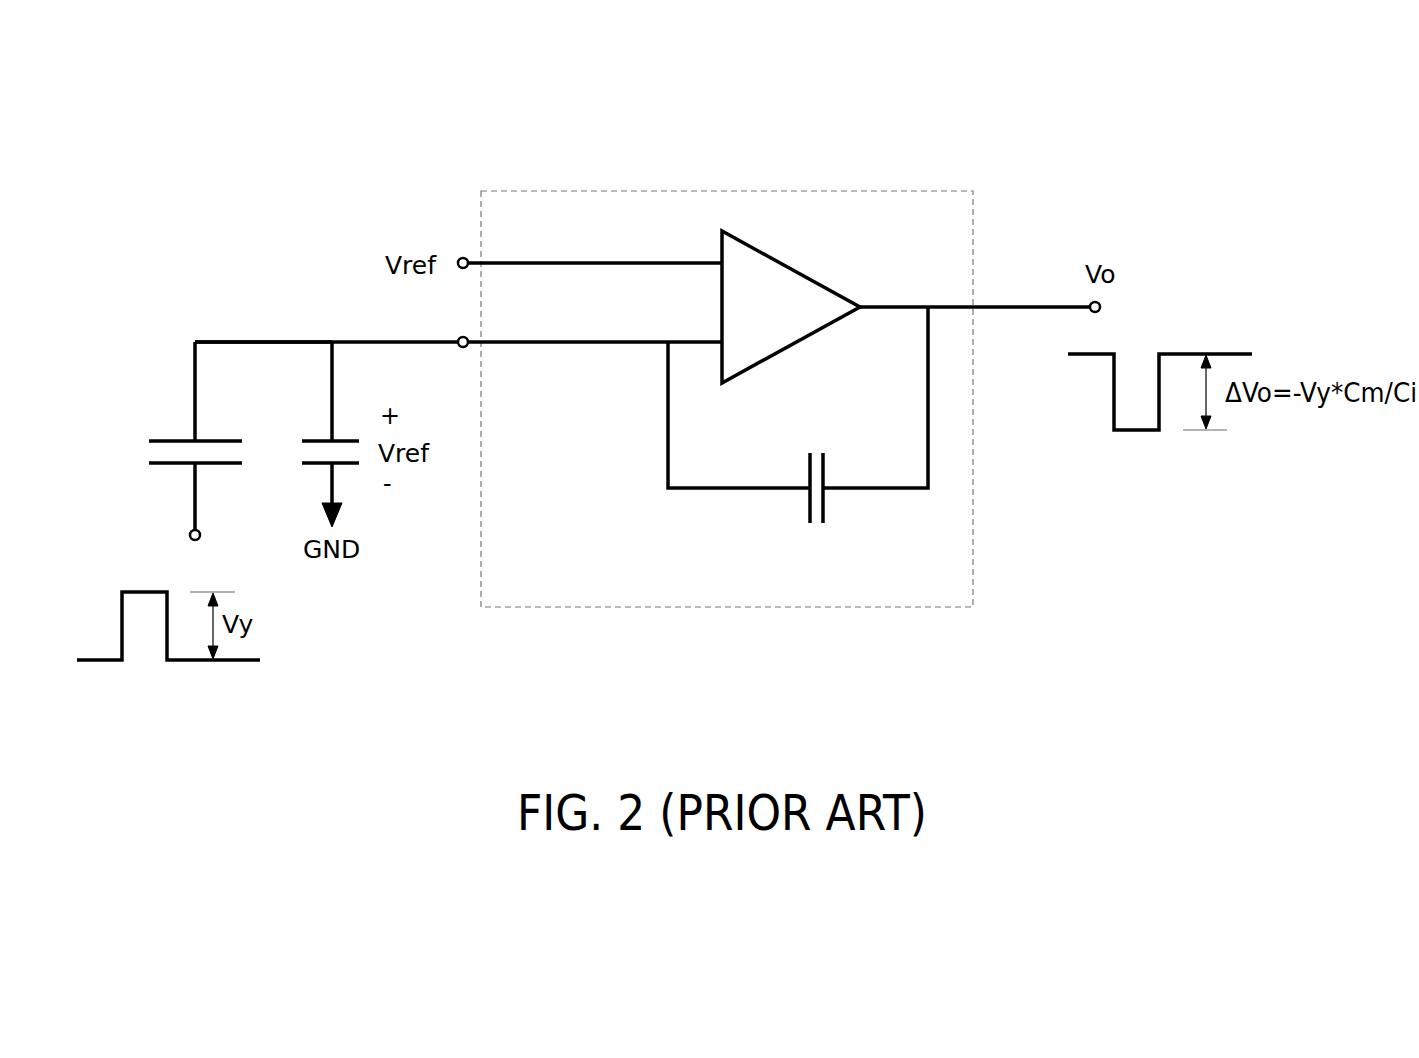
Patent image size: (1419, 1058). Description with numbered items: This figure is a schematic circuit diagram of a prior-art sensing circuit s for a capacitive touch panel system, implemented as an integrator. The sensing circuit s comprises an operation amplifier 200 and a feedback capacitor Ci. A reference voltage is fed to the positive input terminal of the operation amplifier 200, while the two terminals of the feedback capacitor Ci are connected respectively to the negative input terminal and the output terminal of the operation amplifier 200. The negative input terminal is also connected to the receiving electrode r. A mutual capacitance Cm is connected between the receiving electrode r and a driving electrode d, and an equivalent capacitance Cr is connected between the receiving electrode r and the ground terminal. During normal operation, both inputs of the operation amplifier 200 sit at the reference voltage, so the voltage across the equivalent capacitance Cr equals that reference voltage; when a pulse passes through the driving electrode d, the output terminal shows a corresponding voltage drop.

The operation amplifier 200 is at (753, 260).
The receiving electrode r is at (230, 340).
The driving electrode d is at (193, 487).
The sensing circuit s is at (483, 600).
The mutual capacitance Cm is at (172, 436).
The equivalent capacitance Cr is at (315, 434).
The feedback capacitor Ci is at (811, 506).